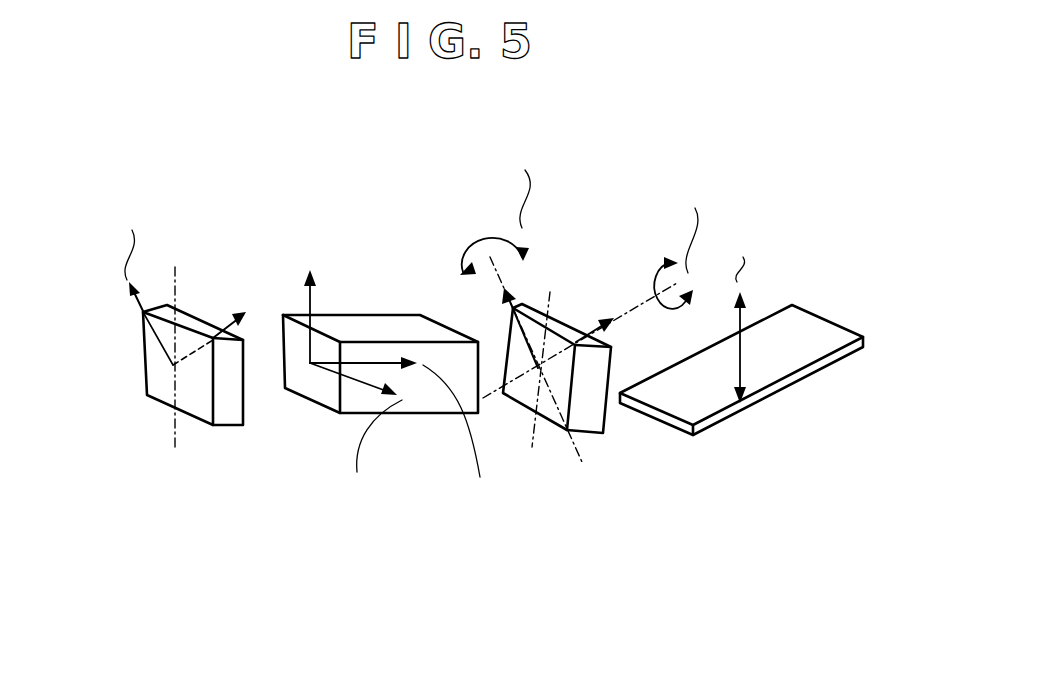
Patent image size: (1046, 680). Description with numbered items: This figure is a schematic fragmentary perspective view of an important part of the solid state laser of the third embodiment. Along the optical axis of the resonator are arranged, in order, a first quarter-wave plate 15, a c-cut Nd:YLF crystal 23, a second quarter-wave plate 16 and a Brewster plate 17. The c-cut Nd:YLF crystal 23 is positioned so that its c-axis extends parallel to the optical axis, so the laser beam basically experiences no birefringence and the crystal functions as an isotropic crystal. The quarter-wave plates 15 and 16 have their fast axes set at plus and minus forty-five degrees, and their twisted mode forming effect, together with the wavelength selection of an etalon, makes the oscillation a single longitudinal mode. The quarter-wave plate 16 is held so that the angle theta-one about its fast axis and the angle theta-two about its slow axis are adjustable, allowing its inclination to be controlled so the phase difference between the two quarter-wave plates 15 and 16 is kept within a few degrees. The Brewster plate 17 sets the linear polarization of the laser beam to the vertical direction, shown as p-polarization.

The λ/4 plate 15 is at (203, 318).
The c-cut Nd:YLF crystal 23 is at (415, 327).
The λ/4 plate 16 is at (573, 327).
The Brewster plate 17 is at (815, 327).